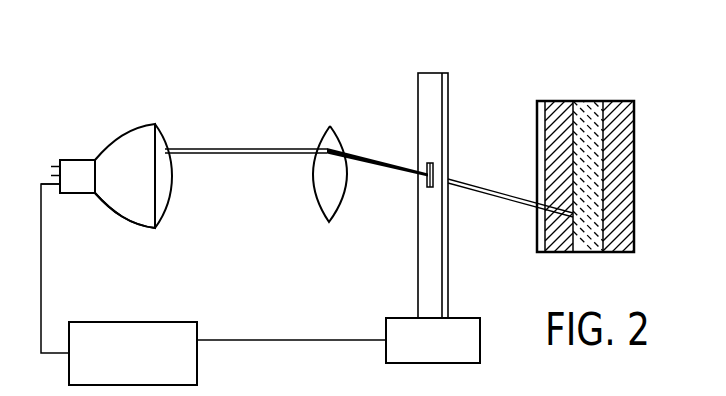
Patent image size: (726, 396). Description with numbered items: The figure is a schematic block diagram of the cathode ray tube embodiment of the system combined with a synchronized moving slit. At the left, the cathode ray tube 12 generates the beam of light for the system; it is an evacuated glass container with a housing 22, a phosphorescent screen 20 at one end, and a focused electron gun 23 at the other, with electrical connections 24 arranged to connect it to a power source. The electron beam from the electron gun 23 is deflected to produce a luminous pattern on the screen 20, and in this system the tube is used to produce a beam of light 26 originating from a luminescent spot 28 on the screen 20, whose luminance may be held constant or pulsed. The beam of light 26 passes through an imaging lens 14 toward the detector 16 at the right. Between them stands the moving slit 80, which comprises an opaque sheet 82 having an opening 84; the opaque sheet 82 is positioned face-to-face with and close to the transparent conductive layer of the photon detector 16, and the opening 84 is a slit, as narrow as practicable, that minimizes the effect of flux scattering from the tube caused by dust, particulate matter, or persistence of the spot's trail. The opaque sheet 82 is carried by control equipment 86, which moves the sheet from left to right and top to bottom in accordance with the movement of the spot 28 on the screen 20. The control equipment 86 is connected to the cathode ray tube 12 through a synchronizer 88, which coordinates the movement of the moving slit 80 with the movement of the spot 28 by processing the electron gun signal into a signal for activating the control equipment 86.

The cathode ray tube 12 is at (123, 121).
The imaging lens 14 is at (331, 126).
The detector 16 is at (592, 86).
The screen 20 is at (163, 228).
The housing 22 is at (125, 200).
The electron gun 23 is at (75, 168).
The electrical connection 24 is at (53, 167).
The beam of light 26 is at (213, 148).
The luminescent spot 28 is at (162, 148).
The moving slit 80 is at (427, 66).
The opaque sheet 82 is at (433, 82).
The opening 84 is at (427, 188).
The control equipment 86 is at (395, 332).
The synchronizer 88 is at (187, 333).